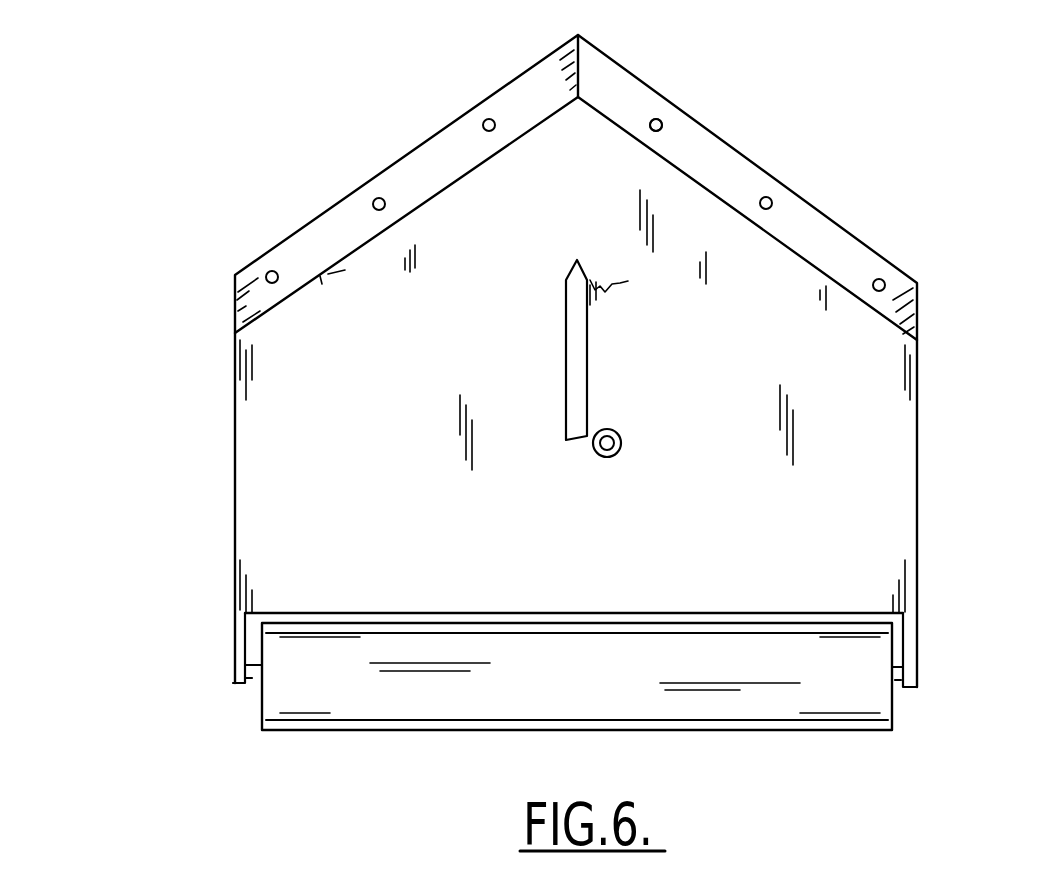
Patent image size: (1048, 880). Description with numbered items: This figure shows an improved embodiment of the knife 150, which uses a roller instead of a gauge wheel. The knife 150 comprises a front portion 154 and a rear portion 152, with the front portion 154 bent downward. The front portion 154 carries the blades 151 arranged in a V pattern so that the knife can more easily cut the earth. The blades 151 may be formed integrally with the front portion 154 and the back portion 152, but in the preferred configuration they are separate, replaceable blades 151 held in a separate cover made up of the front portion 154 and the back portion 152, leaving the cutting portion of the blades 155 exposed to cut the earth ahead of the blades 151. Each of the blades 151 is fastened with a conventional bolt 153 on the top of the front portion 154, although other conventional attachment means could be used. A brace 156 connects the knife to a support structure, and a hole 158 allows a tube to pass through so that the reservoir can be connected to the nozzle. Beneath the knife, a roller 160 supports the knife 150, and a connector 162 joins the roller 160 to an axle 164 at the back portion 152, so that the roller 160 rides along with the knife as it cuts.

The knife 150 is at (872, 117).
The blades 151 is at (632, 92).
The rear portion 152 is at (750, 577).
The bolt 153 is at (664, 123).
The front portion 154 is at (565, 202).
The cutting portion of the blades 155 is at (858, 237).
The brace 156 is at (566, 330).
The hole 158 is at (622, 441).
The roller 160 is at (598, 687).
The connector 162 is at (233, 645).
The axle 164 is at (252, 685).